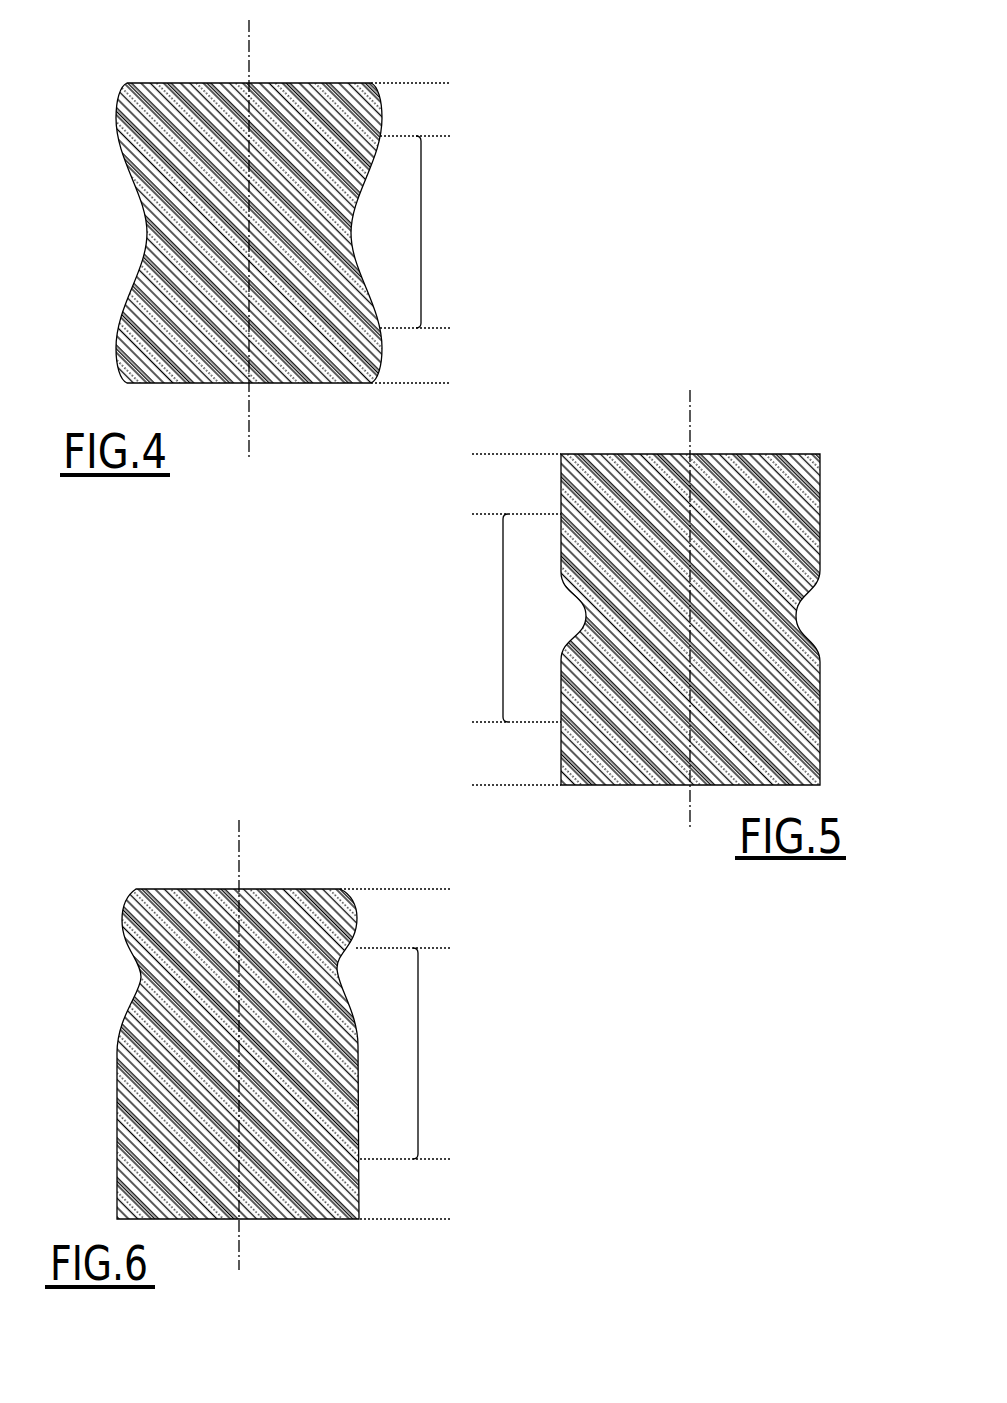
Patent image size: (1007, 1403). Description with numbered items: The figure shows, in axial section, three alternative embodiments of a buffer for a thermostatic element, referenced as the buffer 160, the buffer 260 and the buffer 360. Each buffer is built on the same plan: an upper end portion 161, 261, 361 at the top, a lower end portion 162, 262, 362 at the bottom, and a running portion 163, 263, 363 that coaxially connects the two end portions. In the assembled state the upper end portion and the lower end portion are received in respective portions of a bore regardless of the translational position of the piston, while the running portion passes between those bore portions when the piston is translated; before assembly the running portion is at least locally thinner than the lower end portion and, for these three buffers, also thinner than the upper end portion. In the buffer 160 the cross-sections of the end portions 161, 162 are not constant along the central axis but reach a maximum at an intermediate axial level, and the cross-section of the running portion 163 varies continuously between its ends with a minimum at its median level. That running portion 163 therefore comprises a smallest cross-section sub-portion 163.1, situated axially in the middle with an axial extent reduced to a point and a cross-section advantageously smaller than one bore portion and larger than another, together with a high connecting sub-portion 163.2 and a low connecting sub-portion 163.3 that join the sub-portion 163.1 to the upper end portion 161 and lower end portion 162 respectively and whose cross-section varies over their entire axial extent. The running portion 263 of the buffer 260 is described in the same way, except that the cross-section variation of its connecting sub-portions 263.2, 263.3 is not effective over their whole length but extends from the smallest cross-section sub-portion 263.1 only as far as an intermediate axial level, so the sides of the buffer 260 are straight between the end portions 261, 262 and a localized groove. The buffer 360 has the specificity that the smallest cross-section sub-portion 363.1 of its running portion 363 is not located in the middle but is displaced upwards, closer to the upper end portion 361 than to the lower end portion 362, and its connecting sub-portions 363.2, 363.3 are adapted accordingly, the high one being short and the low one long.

In FIG. 4, the buffer 160 is at (127, 78).
In FIG. 4, the upper end portion 161 is at (452, 83).
In FIG. 4, the lower end portion 162 is at (452, 328).
In FIG. 4, the running portion 163 is at (514, 173).
In FIG. 4, the smallest cross-section sub-portion 163.1 is at (358, 235).
In FIG. 4, the upper connecting sub-portion 163.2 is at (421, 177).
In FIG. 4, the lower connecting sub-portion 163.3 is at (421, 274).
In FIG. 5, the buffer 260 is at (773, 450).
In FIG. 5, the upper end portion 261 is at (468, 454).
In FIG. 5, the lower end portion 262 is at (468, 722).
In FIG. 5, the running portion 263 is at (401, 555).
In FIG. 5, the smallest cross-section sub-portion 263.1 is at (580, 617).
In FIG. 5, the upper connecting sub-portion 263.2 is at (503, 559).
In FIG. 5, the lower connecting sub-portion 263.3 is at (503, 667).
In FIG. 6, the buffer 360 is at (127, 875).
In FIG. 6, the upper end portion 361 is at (452, 889).
In FIG. 6, the lower end portion 362 is at (452, 1159).
In FIG. 6, the running portion 363 is at (509, 955).
In FIG. 6, the smallest cross-section sub-portion 363.1 is at (340, 970).
In FIG. 6, the upper connecting sub-portion 363.2 is at (418, 964).
In FIG. 6, the lower connecting sub-portion 363.3 is at (418, 1062).